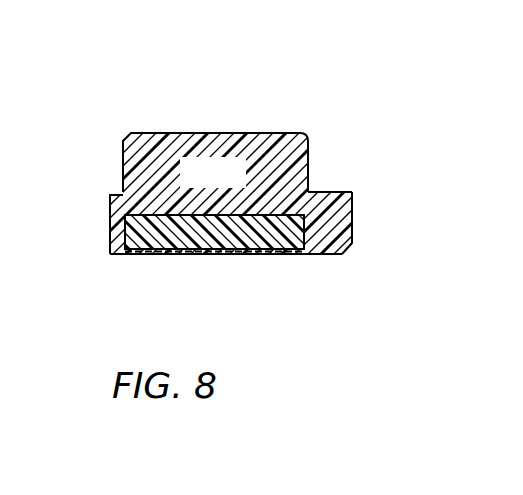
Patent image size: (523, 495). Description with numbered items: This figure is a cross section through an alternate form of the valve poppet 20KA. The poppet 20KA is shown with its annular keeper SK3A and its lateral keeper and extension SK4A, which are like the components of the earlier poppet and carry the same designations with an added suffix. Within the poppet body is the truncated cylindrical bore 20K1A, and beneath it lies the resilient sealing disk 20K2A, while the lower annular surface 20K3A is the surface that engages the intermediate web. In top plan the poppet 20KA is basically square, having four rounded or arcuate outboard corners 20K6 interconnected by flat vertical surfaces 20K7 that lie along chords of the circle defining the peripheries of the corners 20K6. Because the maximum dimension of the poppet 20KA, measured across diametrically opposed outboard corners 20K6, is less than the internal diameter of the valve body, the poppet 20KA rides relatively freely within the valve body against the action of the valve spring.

The valve poppet 20KA is at (243, 185).
The lateral keeper and extension SK4A is at (311, 156).
The annular keeper SK3A is at (333, 192).
The rounded outboard corner 20K6 is at (363, 215).
The flat vertical surface 20K7 is at (110, 231).
The truncated cylindrical bore 20K1A is at (289, 238).
The resilient sealing disk 20K2A is at (145, 255).
The lower annular surface 20K3A is at (118, 256).